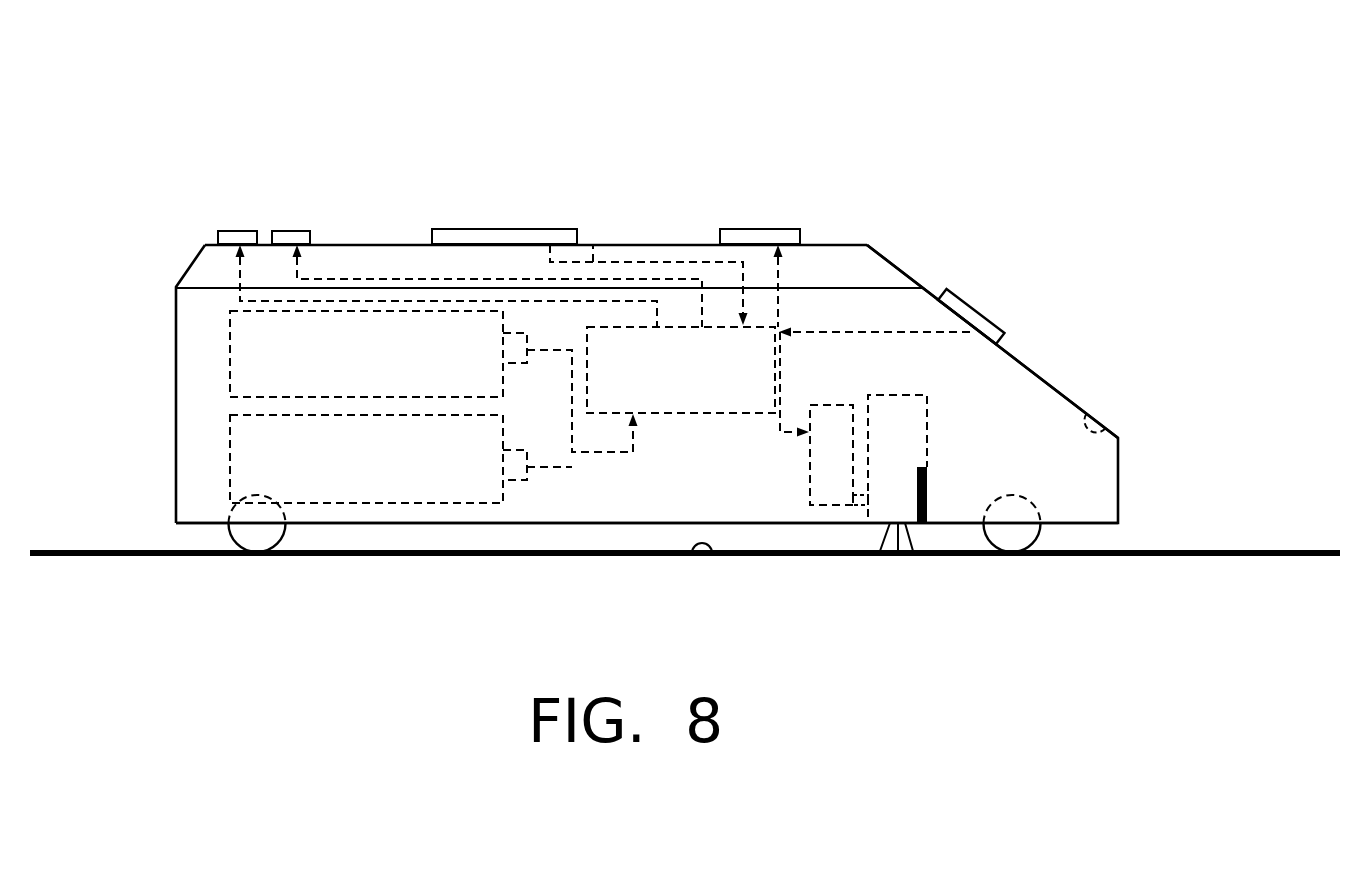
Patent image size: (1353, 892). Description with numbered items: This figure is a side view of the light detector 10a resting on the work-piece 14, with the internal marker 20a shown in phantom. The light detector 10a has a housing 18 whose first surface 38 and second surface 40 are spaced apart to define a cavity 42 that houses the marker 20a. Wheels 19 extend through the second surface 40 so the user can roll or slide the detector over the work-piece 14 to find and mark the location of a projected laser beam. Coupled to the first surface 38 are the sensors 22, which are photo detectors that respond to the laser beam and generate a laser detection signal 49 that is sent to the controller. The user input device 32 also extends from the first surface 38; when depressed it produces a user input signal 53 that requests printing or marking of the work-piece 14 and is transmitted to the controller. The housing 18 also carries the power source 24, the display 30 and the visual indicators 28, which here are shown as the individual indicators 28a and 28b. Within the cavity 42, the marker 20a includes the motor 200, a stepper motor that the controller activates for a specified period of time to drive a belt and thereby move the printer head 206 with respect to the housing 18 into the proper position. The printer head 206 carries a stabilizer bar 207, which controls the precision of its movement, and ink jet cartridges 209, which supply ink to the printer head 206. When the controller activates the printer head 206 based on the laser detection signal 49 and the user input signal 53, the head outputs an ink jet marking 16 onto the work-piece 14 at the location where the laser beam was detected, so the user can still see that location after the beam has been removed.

The light detector 10a is at (1018, 148).
The housing 18 is at (640, 231).
The first surface 38 is at (853, 243).
The second surface 40 is at (605, 523).
The visual indicators 28 is at (427, 199).
The visual indicator 28a is at (287, 230).
The visual indicator 28b is at (240, 230).
The user input device 32 is at (460, 228).
The user input signal 53 is at (593, 243).
The display 30 is at (763, 217).
The marker 20a is at (759, 482).
The power source 24 is at (230, 424).
The sensors 22 is at (978, 305).
The laser detection signal 49 is at (880, 330).
The motor 200 is at (832, 518).
The printer head 206 is at (941, 401).
The stabilizer bar 207 is at (892, 388).
The ink jet cartridges 209 is at (928, 493).
The cavity 42 is at (1108, 430).
The wheels 19 is at (255, 538).
The marking 16 is at (712, 553).
The work-piece 14 is at (58, 557).